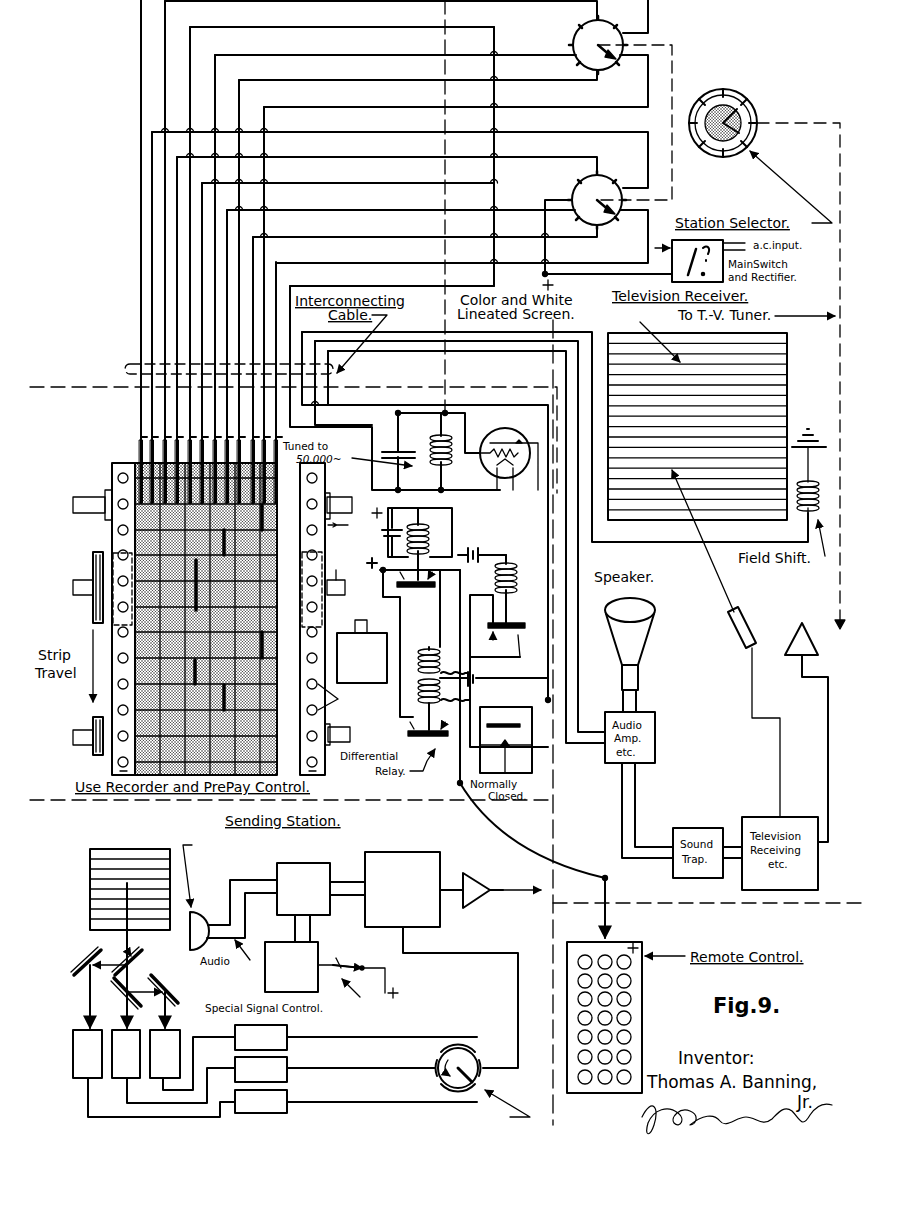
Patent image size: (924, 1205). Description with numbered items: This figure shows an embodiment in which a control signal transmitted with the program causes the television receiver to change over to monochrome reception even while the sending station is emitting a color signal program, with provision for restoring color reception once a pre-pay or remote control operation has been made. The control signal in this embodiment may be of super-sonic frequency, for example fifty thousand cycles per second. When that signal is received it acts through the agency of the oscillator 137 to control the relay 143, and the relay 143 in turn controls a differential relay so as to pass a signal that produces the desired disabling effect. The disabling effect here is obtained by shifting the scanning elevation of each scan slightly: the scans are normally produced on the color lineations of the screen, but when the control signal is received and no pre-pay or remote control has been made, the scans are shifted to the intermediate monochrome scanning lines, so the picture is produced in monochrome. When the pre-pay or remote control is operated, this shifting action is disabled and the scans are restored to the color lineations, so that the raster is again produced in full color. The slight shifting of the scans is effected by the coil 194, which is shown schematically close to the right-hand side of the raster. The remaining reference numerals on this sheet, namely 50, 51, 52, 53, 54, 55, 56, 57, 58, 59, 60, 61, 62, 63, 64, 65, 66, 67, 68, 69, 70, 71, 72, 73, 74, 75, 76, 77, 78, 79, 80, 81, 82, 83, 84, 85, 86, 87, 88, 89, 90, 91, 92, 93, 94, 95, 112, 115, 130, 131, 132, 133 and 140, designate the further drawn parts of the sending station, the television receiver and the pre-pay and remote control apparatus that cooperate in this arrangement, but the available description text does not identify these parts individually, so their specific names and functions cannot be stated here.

The pawl 50 is at (340, 503).
The pawl 51 is at (341, 735).
The holes 52 is at (339, 697).
The guide 53 is at (116, 552).
The contact 54 is at (337, 581).
The sync motor 55 is at (380, 645).
The shaft 56 is at (352, 600).
The perforated strip 57 is at (111, 487).
The record strip 58 is at (148, 763).
The roller 59 is at (93, 718).
The roller 60 is at (93, 571).
The shaft 61 is at (74, 744).
The pins 62 is at (137, 450).
The perforated strip 63 is at (320, 770).
The station selector dial 64 is at (727, 86).
The knob 65 is at (678, 122).
The switch 66 is at (614, 222).
The switch 67 is at (612, 65).
The switch arm 68 is at (588, 241).
The switch arm 69 is at (575, 68).
The conductors 70 is at (404, 160).
The conductors 71 is at (394, 58).
The conductor 72 is at (542, 248).
The input 73 is at (660, 239).
The main switch 74 is at (708, 261).
The conductor 75 is at (494, 125).
The screen 76 is at (834, 340).
The relay 77 is at (518, 719).
The contact 78 is at (500, 739).
The contact 79 is at (516, 748).
The contact 80 is at (503, 719).
The remote control 81 is at (644, 992).
The buttons 82 is at (631, 1036).
The conductor 83 is at (604, 888).
The conductor 84 is at (531, 825).
The red pickup 85 is at (80, 1083).
The green pickup 86 is at (118, 1083).
The blue pickup 87 is at (163, 1080).
The scanned object 88 is at (138, 855).
The mirror 89 is at (142, 956).
The mirror 90 is at (118, 993).
The mirror 91 is at (90, 960).
The mirror 92 is at (166, 982).
The sampler 93 is at (492, 1079).
The transmitter 94 is at (420, 918).
The amplifier 95 is at (472, 908).
The relay armature 112 is at (543, 600).
The relay coil 115 is at (514, 563).
The oscillator 130 is at (322, 962).
The audio unit 131 is at (310, 865).
The microphone 132 is at (202, 912).
The switch 133 is at (349, 963).
The oscillator 137 is at (414, 414).
The tube 140 is at (506, 426).
The relay 143 is at (437, 518).
The coil 194 is at (797, 512).